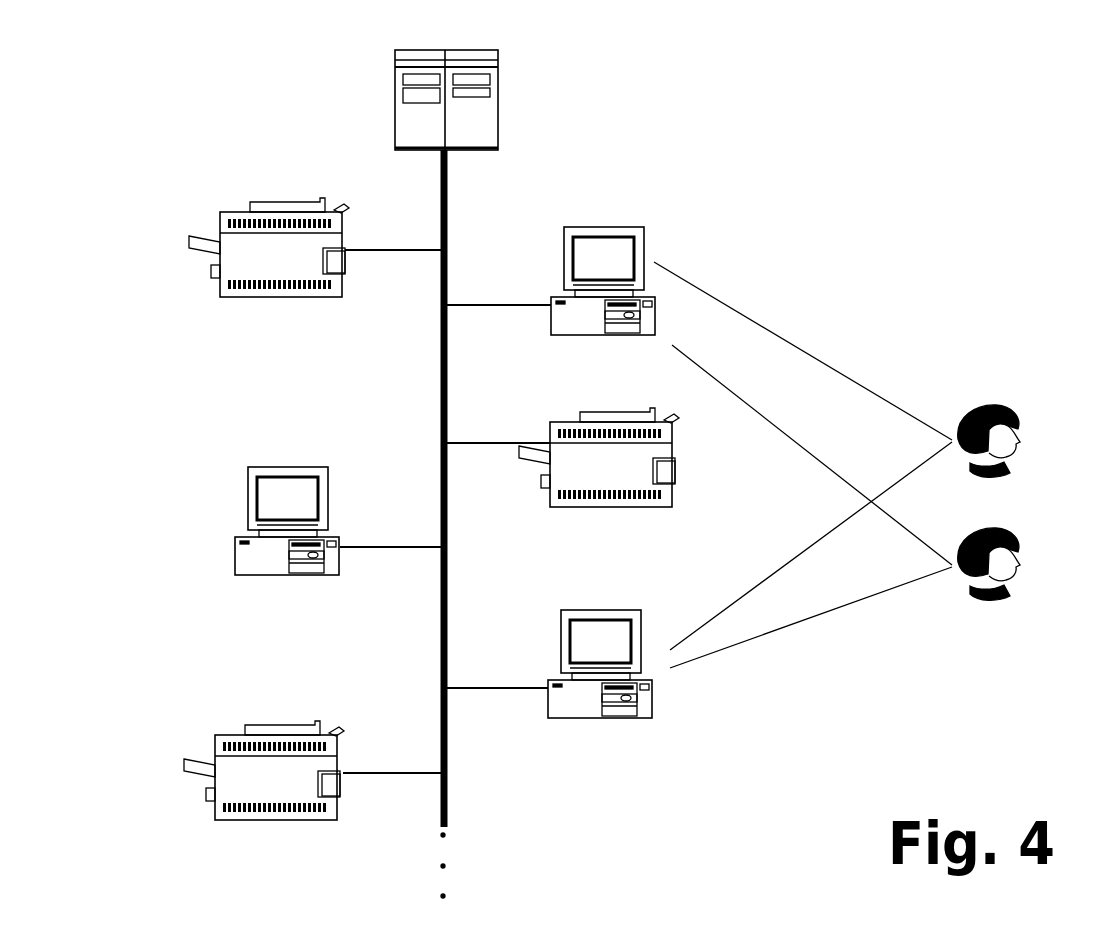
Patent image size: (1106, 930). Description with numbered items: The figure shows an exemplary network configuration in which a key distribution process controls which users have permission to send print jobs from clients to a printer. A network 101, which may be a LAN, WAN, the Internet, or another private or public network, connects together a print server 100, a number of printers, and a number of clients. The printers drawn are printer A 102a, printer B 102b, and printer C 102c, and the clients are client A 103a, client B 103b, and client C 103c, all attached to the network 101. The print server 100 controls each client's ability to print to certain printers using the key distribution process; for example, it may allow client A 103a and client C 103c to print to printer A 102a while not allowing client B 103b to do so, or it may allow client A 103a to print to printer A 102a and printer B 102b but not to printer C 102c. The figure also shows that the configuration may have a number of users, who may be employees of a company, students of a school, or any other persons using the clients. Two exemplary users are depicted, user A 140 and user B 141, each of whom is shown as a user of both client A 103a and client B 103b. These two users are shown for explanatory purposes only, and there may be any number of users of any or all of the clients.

The print server 100 is at (518, 113).
The network 101 is at (460, 808).
The printer A 102a is at (168, 243).
The printer B 102b is at (548, 525).
The printer C 102c is at (160, 788).
The client A 103a is at (565, 228).
The client B 103b is at (618, 756).
The client C 103c is at (216, 523).
The user A 140 is at (1022, 408).
The user B 141 is at (1022, 636).